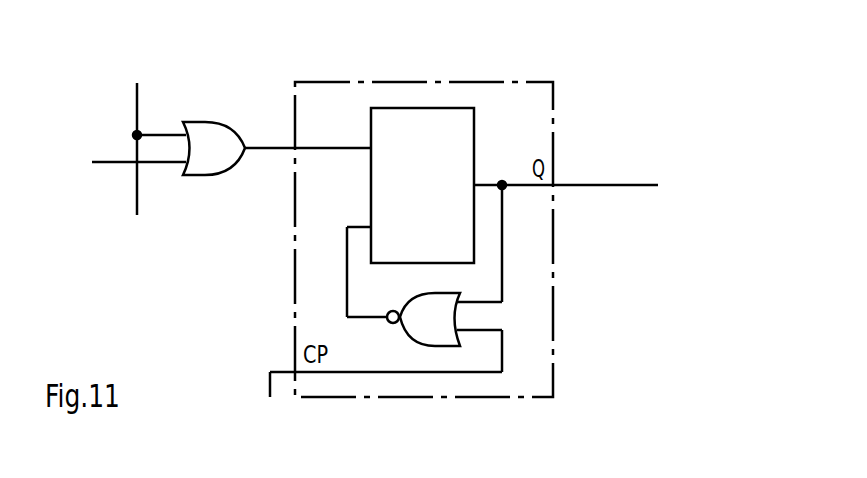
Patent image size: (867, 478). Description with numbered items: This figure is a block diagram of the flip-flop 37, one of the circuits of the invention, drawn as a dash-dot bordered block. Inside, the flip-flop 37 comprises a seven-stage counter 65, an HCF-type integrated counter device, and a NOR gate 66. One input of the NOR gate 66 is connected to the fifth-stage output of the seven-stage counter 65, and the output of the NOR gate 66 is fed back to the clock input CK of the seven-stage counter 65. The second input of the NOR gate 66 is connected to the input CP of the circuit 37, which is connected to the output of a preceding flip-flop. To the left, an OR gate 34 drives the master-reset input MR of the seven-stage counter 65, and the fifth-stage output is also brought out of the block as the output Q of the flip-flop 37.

The OR gate 34 is at (223, 122).
The flip-flop 37 is at (553, 140).
The seven-stage counter 65 is at (474, 132).
The NOR gate 66 is at (407, 333).